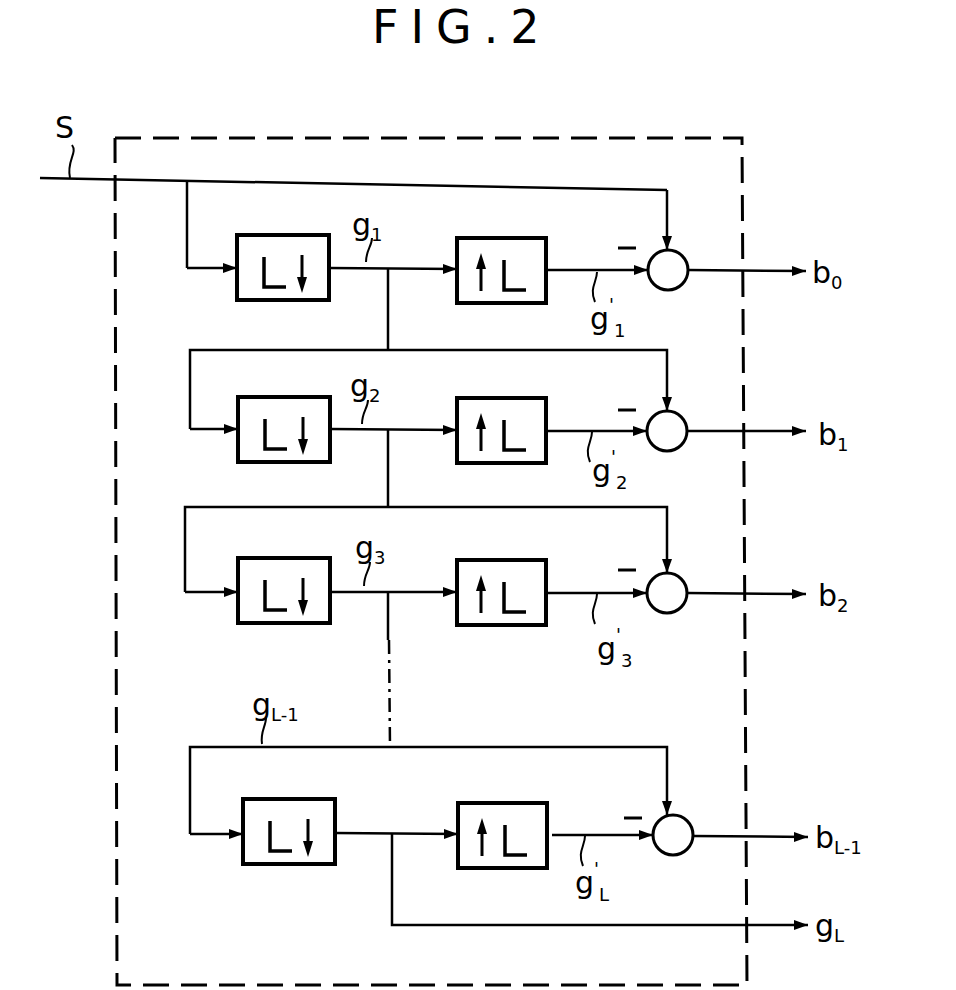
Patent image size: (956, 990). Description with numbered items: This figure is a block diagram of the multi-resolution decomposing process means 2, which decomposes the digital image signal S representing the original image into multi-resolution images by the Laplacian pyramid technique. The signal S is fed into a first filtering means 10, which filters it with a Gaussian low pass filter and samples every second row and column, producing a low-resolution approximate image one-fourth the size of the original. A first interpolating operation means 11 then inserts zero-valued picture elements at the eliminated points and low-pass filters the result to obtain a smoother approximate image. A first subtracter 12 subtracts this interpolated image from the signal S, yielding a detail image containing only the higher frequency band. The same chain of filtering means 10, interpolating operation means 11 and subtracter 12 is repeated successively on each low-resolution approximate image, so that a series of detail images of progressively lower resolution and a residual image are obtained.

The multi-resolution decomposing process means 2 is at (408, 138).
The filtering means 10 is at (264, 302).
The interpolating operation means 11 is at (460, 306).
The subtracter 12 is at (678, 290).